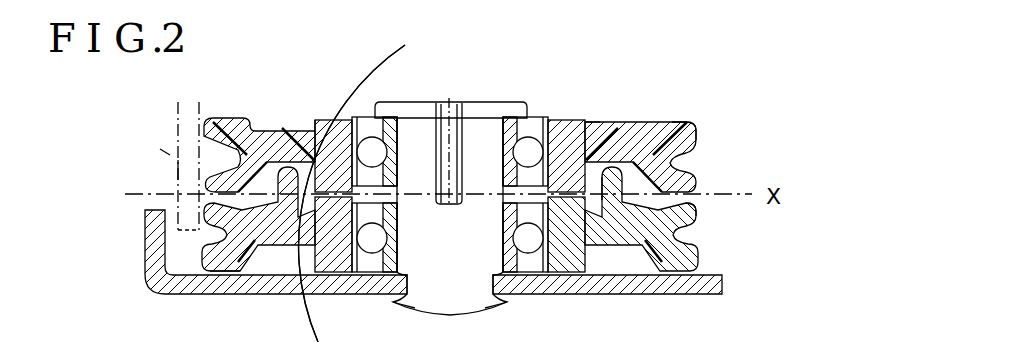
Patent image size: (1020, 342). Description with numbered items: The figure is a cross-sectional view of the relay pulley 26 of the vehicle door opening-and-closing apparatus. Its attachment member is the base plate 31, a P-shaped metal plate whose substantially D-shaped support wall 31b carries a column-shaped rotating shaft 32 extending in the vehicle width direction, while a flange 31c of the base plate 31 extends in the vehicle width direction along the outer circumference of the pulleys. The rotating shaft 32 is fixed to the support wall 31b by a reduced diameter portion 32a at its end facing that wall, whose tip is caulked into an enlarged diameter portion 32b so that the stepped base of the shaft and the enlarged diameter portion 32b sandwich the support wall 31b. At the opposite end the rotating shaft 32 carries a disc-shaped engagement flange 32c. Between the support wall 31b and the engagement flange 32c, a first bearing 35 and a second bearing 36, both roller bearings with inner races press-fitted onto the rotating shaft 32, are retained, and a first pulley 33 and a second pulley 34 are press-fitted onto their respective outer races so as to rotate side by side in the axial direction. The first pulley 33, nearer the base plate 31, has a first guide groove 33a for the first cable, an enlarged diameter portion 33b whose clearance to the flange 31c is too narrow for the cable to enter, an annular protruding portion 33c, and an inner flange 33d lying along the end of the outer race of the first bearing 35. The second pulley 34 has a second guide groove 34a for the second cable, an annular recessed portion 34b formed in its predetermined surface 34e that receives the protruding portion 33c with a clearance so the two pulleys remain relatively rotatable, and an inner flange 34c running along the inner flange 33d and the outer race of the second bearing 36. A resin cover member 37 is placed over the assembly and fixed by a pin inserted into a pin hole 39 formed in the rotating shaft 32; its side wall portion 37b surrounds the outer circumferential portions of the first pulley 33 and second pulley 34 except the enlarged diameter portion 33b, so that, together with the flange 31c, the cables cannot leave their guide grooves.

The relay pulley 26 is at (163, 151).
The base plate 31 is at (429, 268).
The support wall 31b is at (643, 290).
The flange 31c is at (150, 242).
The rotating shaft 32 is at (456, 202).
The reduced diameter portion 32a is at (410, 278).
The enlarged diameter portion 32b is at (443, 306).
The engagement flange 32c is at (530, 100).
The first pulley 33 is at (433, 200).
The first guide groove 33a is at (698, 206).
The enlarged diameter portion 33b is at (173, 285).
The protruding portion 33c is at (618, 162).
The inner flange 33d is at (506, 228).
The second pulley 34 is at (486, 186).
The second guide groove 34a is at (700, 124).
The annular recessed portion 34b is at (588, 121).
The inner flange 34c is at (506, 188).
The predetermined surface 34e is at (355, 186).
The first bearing 35 is at (342, 329).
The second bearing 36 is at (386, 140).
The cover member 37 is at (137, 166).
The side wall portion 37b is at (178, 168).
The pin hole 39 is at (453, 105).